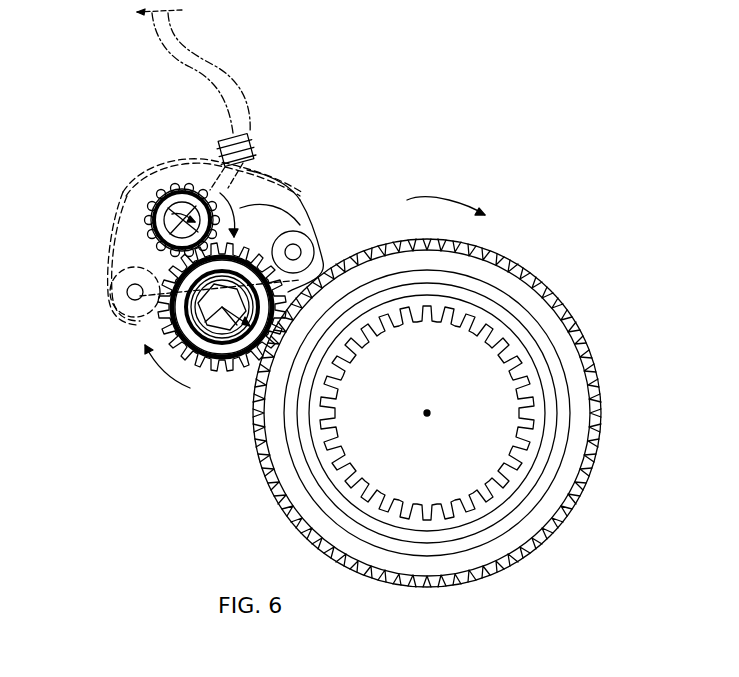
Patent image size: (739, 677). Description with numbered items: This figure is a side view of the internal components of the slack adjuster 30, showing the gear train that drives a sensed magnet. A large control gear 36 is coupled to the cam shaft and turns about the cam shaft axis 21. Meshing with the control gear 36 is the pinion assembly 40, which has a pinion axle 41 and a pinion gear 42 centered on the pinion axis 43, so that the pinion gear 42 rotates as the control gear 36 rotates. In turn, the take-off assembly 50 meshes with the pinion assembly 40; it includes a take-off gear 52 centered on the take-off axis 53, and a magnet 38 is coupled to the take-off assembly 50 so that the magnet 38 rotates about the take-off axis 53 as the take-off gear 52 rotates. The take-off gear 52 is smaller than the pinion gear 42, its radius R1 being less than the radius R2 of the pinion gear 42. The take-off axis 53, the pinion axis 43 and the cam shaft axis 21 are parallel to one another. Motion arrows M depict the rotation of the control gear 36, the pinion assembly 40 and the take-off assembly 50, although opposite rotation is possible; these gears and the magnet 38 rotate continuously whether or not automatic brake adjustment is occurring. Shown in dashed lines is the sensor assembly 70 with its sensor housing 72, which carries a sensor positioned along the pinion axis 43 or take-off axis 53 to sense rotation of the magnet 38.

The cam shaft axis 21 is at (429, 412).
The slack adjuster 30 is at (115, 417).
The control gear 36 is at (497, 328).
The magnet 38 is at (165, 190).
The pinion assembly 40 is at (115, 353).
The pinion axle 41 is at (207, 314).
The pinion gear 42 is at (317, 275).
The pinion axis 43 is at (130, 294).
The take-off assembly 50 is at (127, 220).
The take-off gear 52 is at (204, 190).
The take-off axis 53 is at (157, 238).
The sensor assembly 70 is at (303, 202).
The sensor housing 72 is at (305, 198).
The radius of the take-off gear R1 is at (210, 196).
The radius of the pinion gear R2 is at (237, 325).
The motion arrows M is at (240, 208).